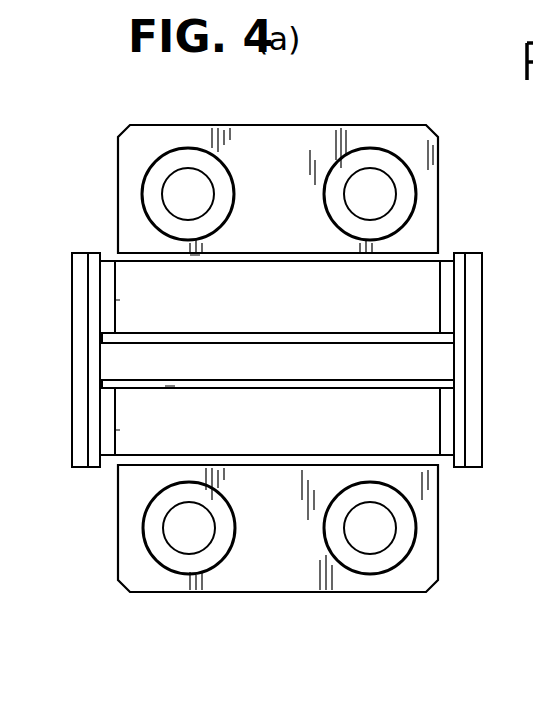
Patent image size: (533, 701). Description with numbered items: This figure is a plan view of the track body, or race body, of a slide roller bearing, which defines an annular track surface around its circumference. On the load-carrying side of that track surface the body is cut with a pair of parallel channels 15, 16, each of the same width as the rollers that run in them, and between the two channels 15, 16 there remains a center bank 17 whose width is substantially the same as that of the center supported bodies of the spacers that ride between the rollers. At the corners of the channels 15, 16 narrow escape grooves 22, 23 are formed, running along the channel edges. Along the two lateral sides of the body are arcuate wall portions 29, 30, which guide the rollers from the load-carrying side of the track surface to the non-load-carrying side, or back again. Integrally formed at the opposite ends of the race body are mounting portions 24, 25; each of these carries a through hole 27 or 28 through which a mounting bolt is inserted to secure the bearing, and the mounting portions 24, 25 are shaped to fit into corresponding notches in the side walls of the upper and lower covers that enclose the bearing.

The channel 15 is at (275, 418).
The channel 16 is at (280, 296).
The center bank 17 is at (430, 362).
The escape groove 22 is at (240, 338).
The escape groove 23 is at (195, 258).
The mounting portion 24 is at (281, 146).
The mounting portion 25 is at (265, 578).
The through hole 27 is at (178, 176).
The through hole 28 is at (190, 552).
The arcuate wall portion 29 is at (72, 279).
The arcuate wall portion 30 is at (485, 296).